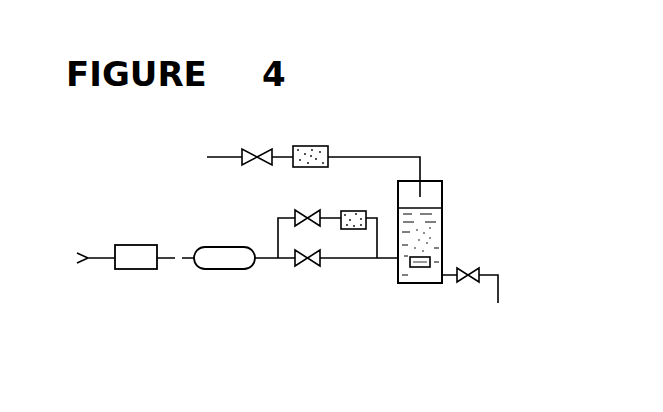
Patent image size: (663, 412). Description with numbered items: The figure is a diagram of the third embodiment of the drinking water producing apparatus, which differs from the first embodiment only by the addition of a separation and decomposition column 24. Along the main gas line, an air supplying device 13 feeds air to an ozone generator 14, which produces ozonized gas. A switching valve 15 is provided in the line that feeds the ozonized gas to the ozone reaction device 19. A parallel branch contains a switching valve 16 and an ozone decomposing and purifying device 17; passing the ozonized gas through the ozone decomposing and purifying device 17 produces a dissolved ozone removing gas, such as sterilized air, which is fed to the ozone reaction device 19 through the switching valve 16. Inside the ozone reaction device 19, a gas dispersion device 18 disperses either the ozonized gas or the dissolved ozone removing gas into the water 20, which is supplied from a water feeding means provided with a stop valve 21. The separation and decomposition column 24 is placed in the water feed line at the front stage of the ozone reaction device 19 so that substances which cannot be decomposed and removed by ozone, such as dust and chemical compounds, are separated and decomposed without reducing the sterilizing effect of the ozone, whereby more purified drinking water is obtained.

The air supplying device 13 is at (129, 270).
The ozone generator 14 is at (217, 270).
The switching valve 15 is at (300, 267).
The switching valve 16 is at (304, 212).
The ozone decomposing and purifying device 17 is at (350, 211).
The gas dispersion device 18 is at (417, 268).
The ozone reaction device 19 is at (443, 243).
The water 20 is at (436, 218).
The stop valve 21 is at (262, 148).
The separation and decomposition column 24 is at (328, 146).